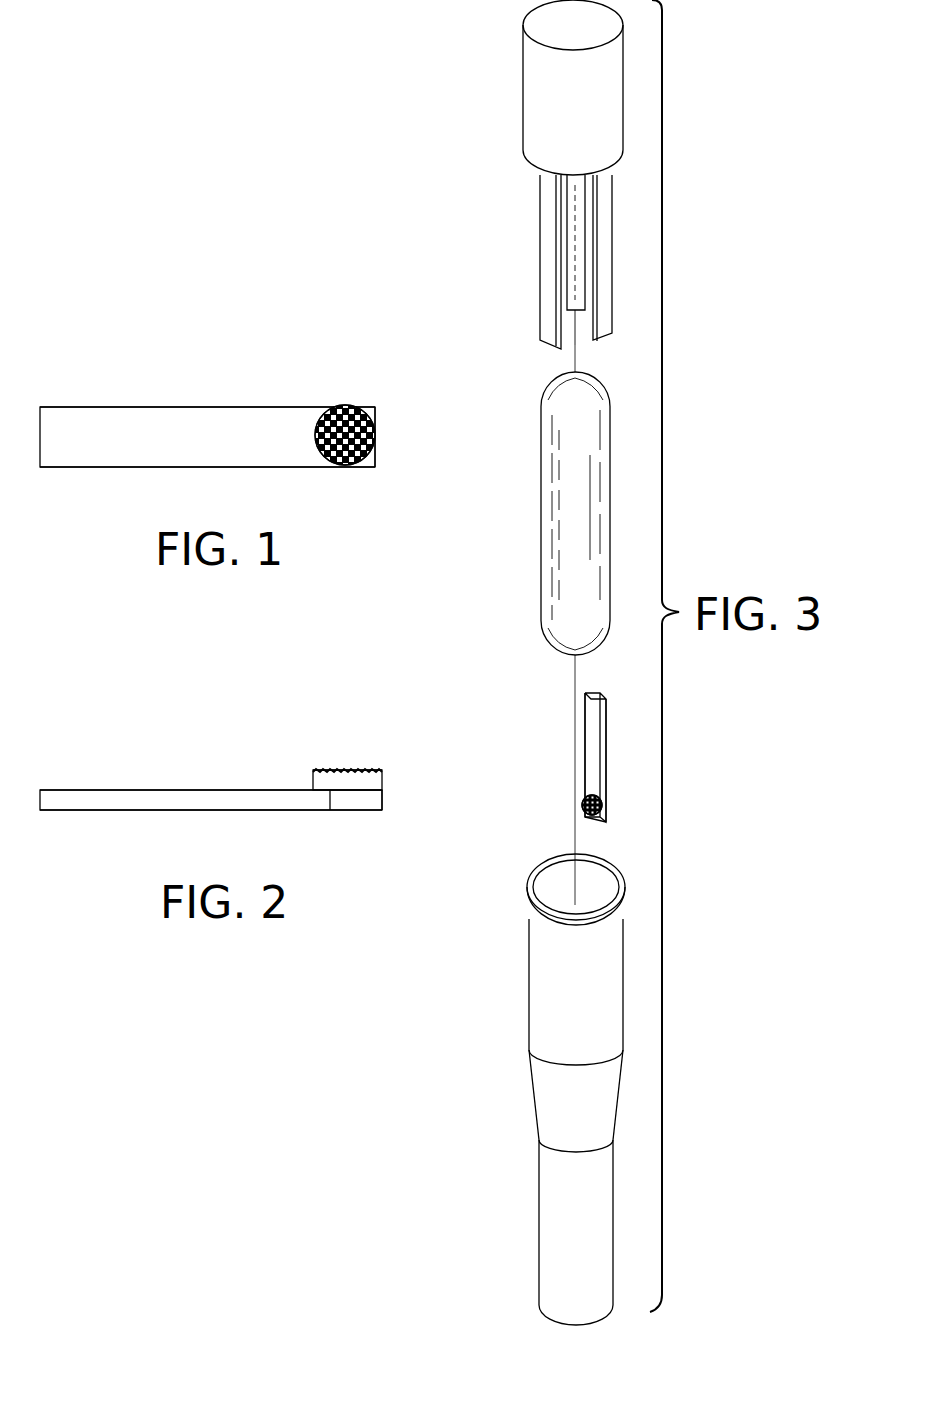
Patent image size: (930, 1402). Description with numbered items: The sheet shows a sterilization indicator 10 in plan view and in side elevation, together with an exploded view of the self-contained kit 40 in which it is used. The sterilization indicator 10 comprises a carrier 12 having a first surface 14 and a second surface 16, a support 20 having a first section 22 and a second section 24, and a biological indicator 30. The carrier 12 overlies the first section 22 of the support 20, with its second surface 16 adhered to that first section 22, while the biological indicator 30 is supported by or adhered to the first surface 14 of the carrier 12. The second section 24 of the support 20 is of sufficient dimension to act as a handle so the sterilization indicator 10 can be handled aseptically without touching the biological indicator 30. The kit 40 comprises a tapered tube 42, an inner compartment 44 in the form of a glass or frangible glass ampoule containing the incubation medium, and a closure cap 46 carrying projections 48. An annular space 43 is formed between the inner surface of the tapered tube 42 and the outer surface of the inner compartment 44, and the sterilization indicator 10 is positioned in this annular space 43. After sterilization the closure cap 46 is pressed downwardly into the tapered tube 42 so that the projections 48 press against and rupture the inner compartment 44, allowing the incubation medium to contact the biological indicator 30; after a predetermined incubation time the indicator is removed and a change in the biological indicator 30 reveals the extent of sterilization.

In FIG. 1, the sterilization indicator 10 is at (112, 366).
In FIG. 2, the sterilization indicator 10 is at (130, 736).
In FIG. 3, the sterilization indicator 10 is at (585, 728).
In FIG. 1, the carrier 12 is at (368, 412).
In FIG. 2, the carrier 12 is at (382, 782).
In FIG. 3, the carrier 12 is at (583, 802).
In FIG. 2, the first surface 14 is at (327, 768).
In FIG. 2, the second surface 16 is at (328, 810).
In FIG. 1, the support 20 is at (168, 408).
In FIG. 2, the support 20 is at (160, 791).
In FIG. 3, the support 20 is at (594, 748).
In FIG. 1, the first section 22 is at (352, 470).
In FIG. 2, the first section 22 is at (345, 812).
In FIG. 3, the first section 22 is at (608, 806).
In FIG. 1, the second section 24 is at (120, 468).
In FIG. 2, the second section 24 is at (105, 812).
In FIG. 3, the second section 24 is at (608, 758).
In FIG. 1, the biological indicator 30 is at (368, 433).
In FIG. 2, the biological indicator 30 is at (350, 768).
In FIG. 3, the biological indicator 30 is at (590, 812).
In FIG. 3, the kit 40 is at (444, 180).
In FIG. 3, the tapered tube 42 is at (530, 1027).
In FIG. 3, the annular space 43 is at (609, 892).
In FIG. 3, the inner compartment 44 is at (543, 512).
In FIG. 3, the closure cap 46 is at (527, 64).
In FIG. 3, the projections 48 is at (548, 253).